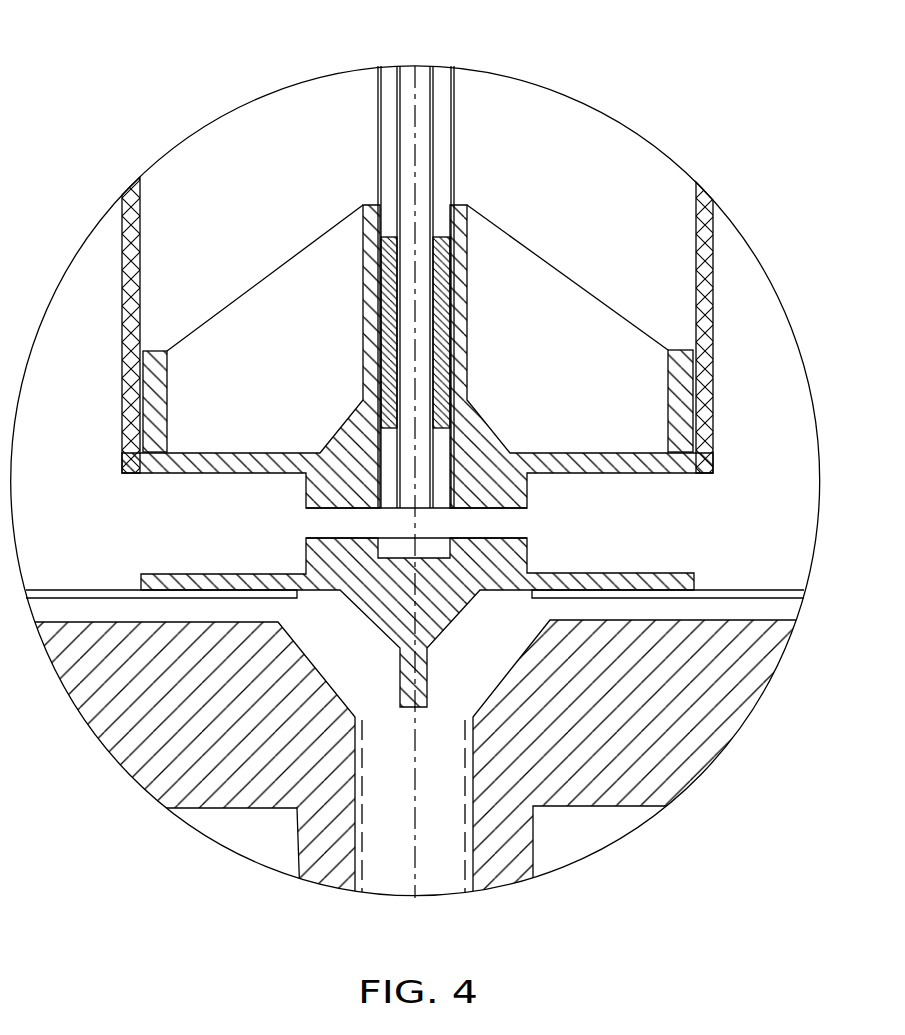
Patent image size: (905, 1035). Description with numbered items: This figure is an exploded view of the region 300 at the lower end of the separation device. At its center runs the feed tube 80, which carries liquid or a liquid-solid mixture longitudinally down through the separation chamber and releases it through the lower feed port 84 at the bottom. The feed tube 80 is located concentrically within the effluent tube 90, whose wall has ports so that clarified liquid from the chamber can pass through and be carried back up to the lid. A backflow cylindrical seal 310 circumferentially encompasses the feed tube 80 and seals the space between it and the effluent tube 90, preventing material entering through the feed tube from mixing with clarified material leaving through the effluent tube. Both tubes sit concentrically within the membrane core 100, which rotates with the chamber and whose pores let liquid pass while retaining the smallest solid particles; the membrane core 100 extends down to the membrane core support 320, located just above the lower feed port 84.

The lower feed assembly 300 is at (126, 67).
The feed tube 80 is at (434, 77).
The effluent tube 90 is at (453, 110).
The membrane core support 320 is at (467, 203).
The backflow cylindrical seal 310 is at (444, 280).
The membrane core 100 is at (713, 253).
The lower feed port 84 is at (529, 522).